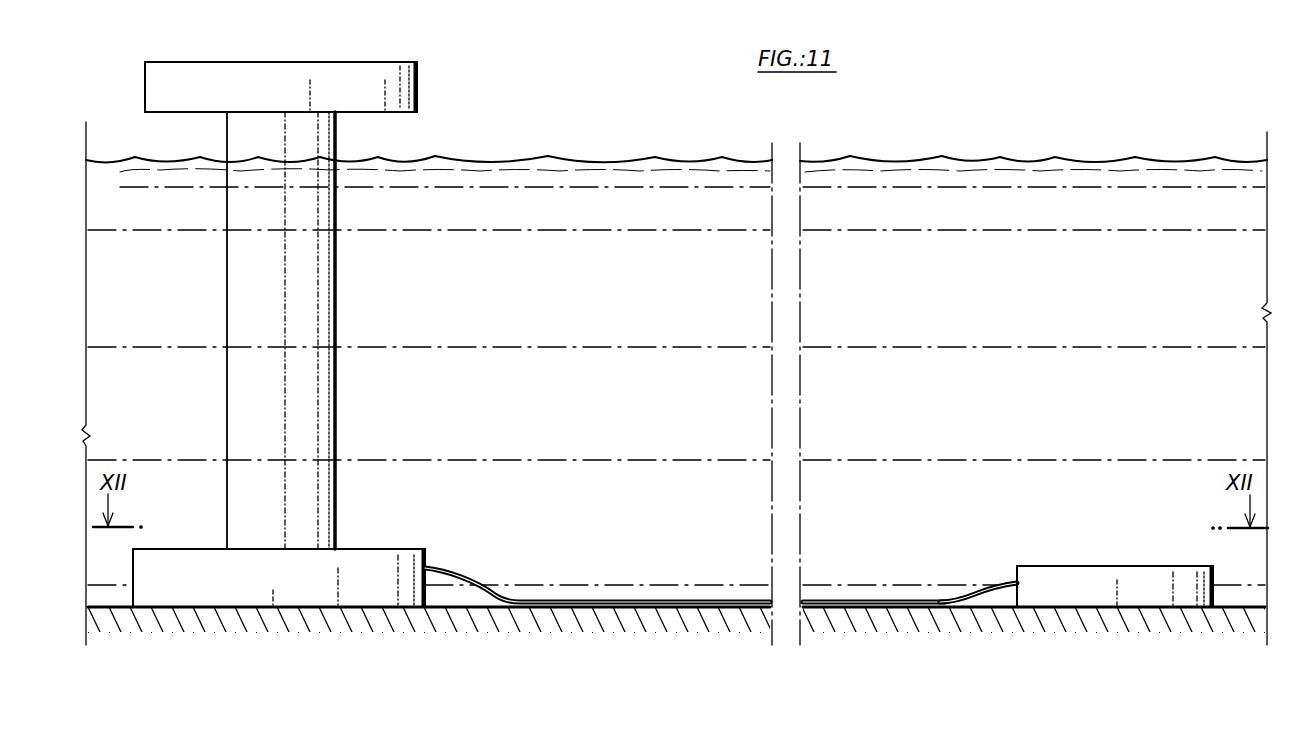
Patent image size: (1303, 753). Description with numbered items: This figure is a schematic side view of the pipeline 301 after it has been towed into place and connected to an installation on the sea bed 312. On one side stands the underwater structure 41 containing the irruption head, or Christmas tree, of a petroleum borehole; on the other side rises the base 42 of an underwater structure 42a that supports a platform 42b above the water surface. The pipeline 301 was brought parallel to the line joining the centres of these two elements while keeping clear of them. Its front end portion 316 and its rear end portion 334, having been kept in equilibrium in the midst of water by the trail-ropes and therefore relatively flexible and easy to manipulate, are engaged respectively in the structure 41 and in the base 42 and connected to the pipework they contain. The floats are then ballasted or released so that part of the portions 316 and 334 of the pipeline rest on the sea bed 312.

The platform 42b is at (396, 77).
The underwater structure 42a is at (313, 303).
The base 42 is at (383, 561).
The rear end portion 334 is at (468, 580).
The pipeline 301 is at (740, 601).
The front end portion 316 is at (977, 587).
The underwater structure 41 is at (1131, 578).
The sea bed 312 is at (1237, 606).